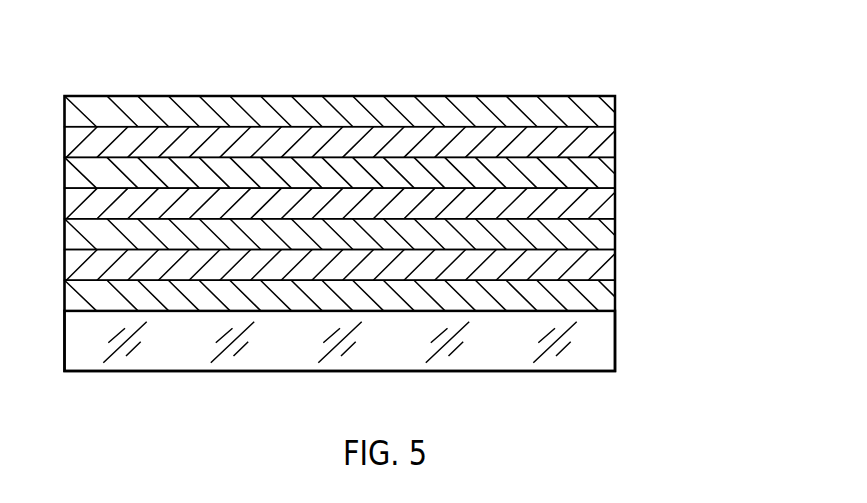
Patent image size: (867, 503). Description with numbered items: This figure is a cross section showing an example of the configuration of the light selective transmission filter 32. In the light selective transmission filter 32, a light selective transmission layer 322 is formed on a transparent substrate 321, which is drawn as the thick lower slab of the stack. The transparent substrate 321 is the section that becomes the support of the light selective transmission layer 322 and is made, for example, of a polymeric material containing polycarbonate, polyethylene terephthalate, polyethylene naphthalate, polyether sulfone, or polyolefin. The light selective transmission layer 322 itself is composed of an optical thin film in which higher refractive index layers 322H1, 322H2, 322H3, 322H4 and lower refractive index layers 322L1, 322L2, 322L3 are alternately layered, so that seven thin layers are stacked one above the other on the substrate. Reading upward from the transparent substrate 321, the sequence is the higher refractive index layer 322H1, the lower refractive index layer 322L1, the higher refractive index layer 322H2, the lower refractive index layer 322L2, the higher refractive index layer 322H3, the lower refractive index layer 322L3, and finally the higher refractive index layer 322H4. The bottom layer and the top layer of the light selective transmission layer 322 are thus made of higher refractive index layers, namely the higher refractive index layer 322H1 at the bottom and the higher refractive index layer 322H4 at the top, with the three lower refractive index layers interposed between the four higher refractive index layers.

The light selective transmission filter 32 is at (425, 186).
The transparent substrate 321 is at (607, 343).
The light selective transmission layer 322 is at (425, 204).
The higher refractive index layer 322H1 is at (391, 296).
The higher refractive index layer 322H2 is at (615, 234).
The higher refractive index layer 322H3 is at (615, 173).
The higher refractive index layer 322H4 is at (615, 111).
The lower refractive index layer 322L1 is at (615, 265).
The lower refractive index layer 322L2 is at (615, 204).
The lower refractive index layer 322L3 is at (615, 142).